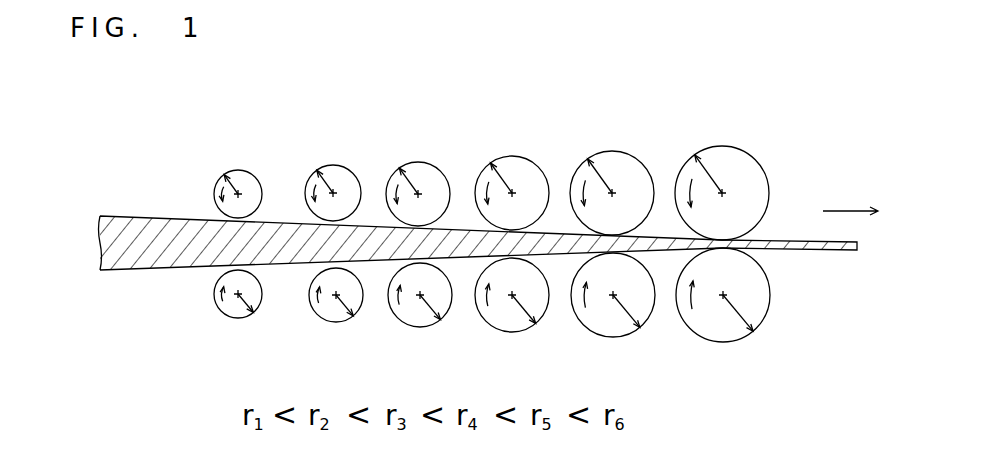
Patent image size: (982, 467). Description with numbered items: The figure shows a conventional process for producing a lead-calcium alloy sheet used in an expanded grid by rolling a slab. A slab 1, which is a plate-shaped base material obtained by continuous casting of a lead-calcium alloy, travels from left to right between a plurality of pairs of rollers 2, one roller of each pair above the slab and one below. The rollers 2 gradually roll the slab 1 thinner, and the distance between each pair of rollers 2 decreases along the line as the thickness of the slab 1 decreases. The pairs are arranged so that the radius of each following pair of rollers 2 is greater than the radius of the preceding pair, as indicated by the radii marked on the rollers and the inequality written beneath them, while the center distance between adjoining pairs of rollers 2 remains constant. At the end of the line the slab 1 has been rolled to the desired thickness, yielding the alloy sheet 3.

The slab 1 is at (135, 273).
The rollers 2 is at (245, 170).
The alloy sheet 3 is at (827, 252).